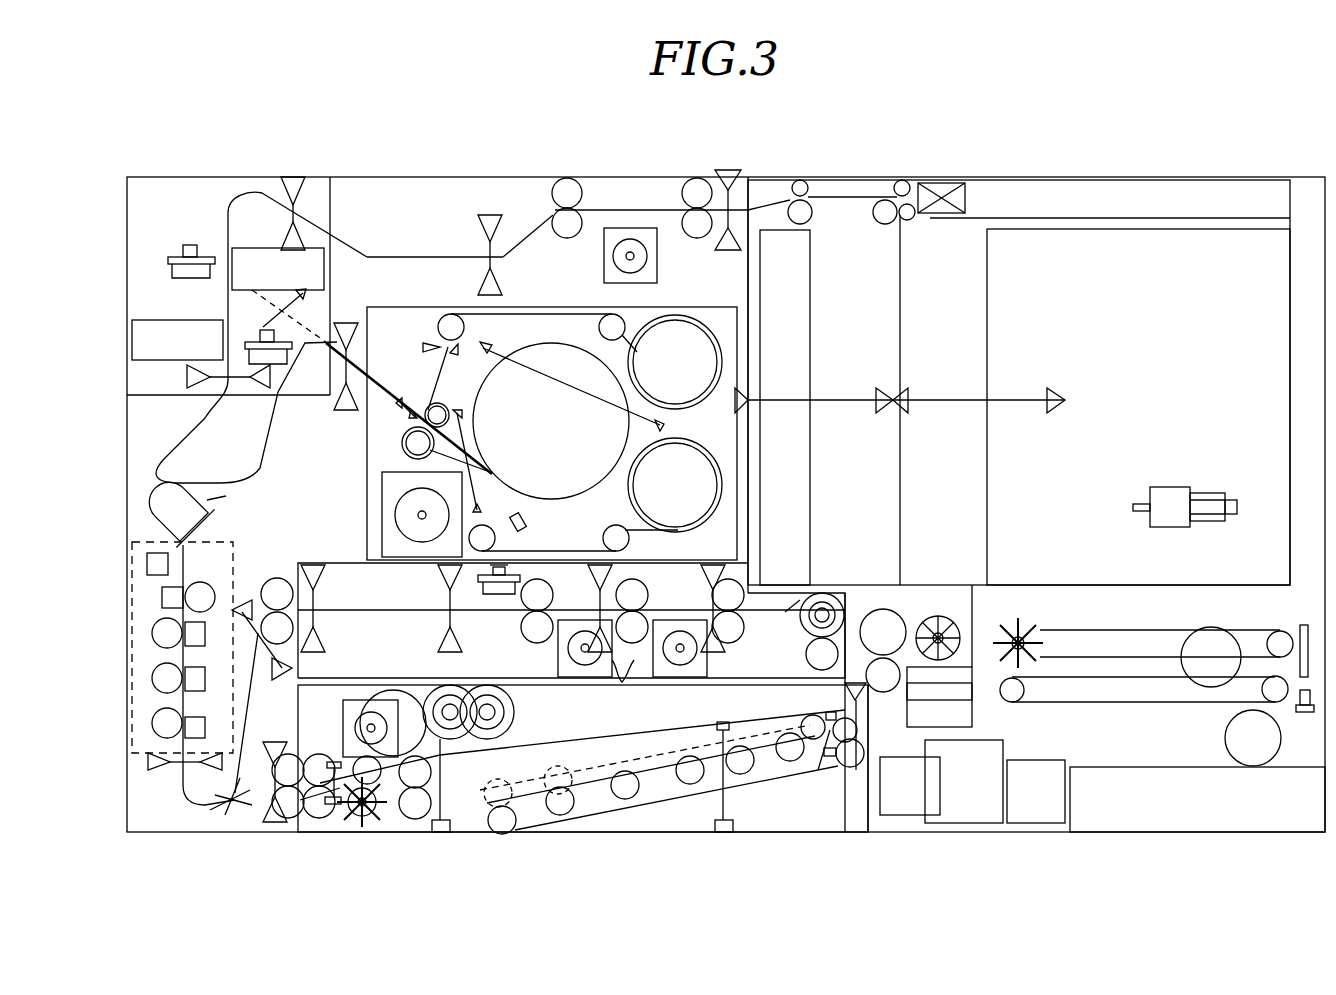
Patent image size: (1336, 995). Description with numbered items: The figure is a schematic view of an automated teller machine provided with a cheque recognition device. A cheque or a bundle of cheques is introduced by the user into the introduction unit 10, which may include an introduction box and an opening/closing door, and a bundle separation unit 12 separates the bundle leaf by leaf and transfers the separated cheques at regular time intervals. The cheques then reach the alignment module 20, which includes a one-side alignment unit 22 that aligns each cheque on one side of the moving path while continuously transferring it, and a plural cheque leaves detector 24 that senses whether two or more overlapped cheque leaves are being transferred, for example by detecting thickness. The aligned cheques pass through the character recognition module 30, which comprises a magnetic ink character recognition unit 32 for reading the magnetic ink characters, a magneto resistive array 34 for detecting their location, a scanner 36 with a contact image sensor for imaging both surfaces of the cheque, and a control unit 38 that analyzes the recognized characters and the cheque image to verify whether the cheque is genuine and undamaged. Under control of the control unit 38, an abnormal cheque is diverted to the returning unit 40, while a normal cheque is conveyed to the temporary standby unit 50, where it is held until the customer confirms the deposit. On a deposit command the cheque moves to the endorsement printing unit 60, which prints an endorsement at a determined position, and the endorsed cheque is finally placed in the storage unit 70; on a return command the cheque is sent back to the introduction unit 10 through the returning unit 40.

The introduction unit 10 is at (1150, 712).
The bundle separation unit 12 is at (958, 646).
The alignment module 20 is at (571, 727).
The one-side alignment unit 22 is at (622, 682).
The plural cheque leaves detector 24 is at (500, 594).
The character recognition module 30 is at (176, 673).
The magnetic ink character recognition (MICR) unit 32 is at (195, 735).
The magneto resistive (MR) array 34 is at (185, 660).
The scanner 36 is at (178, 620).
The control unit 38 is at (147, 562).
The returning unit 40 is at (765, 797).
The temporary standby unit 50 is at (407, 307).
The endorsement printing unit 60 is at (333, 202).
The storage unit 70 is at (1138, 229).